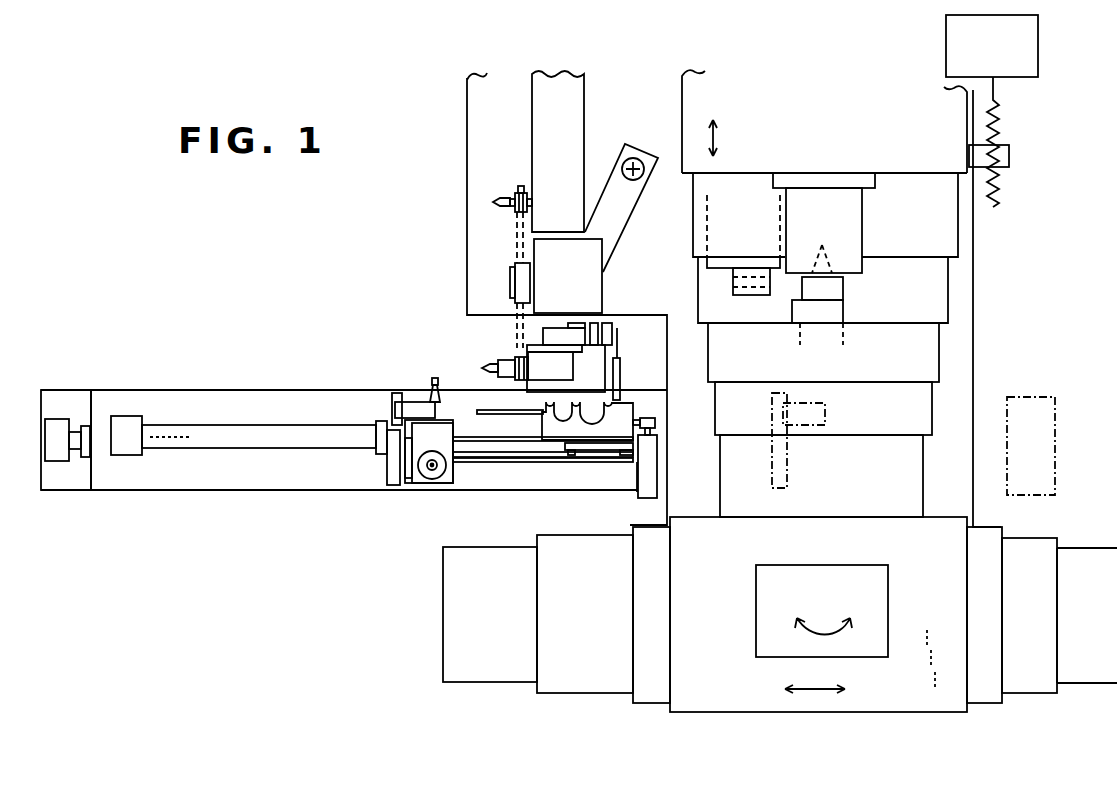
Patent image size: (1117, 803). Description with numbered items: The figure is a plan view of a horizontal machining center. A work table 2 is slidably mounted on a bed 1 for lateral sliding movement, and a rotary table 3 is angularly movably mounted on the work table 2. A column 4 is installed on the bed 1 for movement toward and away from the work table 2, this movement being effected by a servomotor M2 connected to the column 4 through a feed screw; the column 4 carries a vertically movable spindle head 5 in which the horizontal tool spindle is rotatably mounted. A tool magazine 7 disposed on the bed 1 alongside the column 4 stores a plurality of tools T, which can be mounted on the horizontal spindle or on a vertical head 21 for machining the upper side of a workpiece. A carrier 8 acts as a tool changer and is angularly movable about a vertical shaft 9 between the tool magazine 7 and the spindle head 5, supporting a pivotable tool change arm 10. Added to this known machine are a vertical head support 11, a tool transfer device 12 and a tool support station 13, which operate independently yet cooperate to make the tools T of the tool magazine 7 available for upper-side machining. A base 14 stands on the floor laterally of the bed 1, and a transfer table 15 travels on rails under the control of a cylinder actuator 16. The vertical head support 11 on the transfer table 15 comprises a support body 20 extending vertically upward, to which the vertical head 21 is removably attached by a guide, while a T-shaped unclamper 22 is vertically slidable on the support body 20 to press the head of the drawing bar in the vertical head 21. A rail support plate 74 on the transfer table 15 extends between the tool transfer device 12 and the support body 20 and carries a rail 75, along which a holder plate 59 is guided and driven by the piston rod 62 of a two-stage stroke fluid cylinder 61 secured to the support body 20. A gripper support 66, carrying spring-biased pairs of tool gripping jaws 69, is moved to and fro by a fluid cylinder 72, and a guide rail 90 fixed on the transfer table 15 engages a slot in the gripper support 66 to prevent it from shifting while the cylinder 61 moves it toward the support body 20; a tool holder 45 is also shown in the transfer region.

The bed 1 is at (968, 312).
The work table 2 is at (910, 700).
The rotary table 3 is at (778, 648).
The column 4 is at (690, 178).
The spindle head 5 is at (850, 221).
The tool magazine 7 is at (560, 78).
The carrier 8 is at (560, 258).
The vertical shaft 9 is at (641, 158).
The tool change arm 10 is at (520, 283).
The vertical head support 11 is at (400, 508).
The tool transfer device 12 is at (625, 326).
The tool support station 13 is at (590, 398).
The base 14 is at (67, 394).
The transfer table 15 is at (205, 480).
The cylinder actuator 16 is at (84, 462).
The support body 20 is at (392, 468).
The vertical head 21 is at (456, 488).
The unclamper 22 is at (400, 410).
The tool holder 45 is at (536, 362).
The holder plate 59 is at (604, 460).
The two-stage stroke fluid cylinder 61 is at (255, 430).
The piston rod 62 is at (470, 437).
The gripper support 66 is at (560, 447).
The tool gripping jaws 69 is at (545, 412).
The fluid cylinder 72 is at (658, 485).
The rail support plate 74 is at (487, 465).
The rail 75 is at (516, 462).
The guide rail 90 is at (475, 410).
The tools T is at (503, 202).
The servomotor M2 is at (1040, 62).